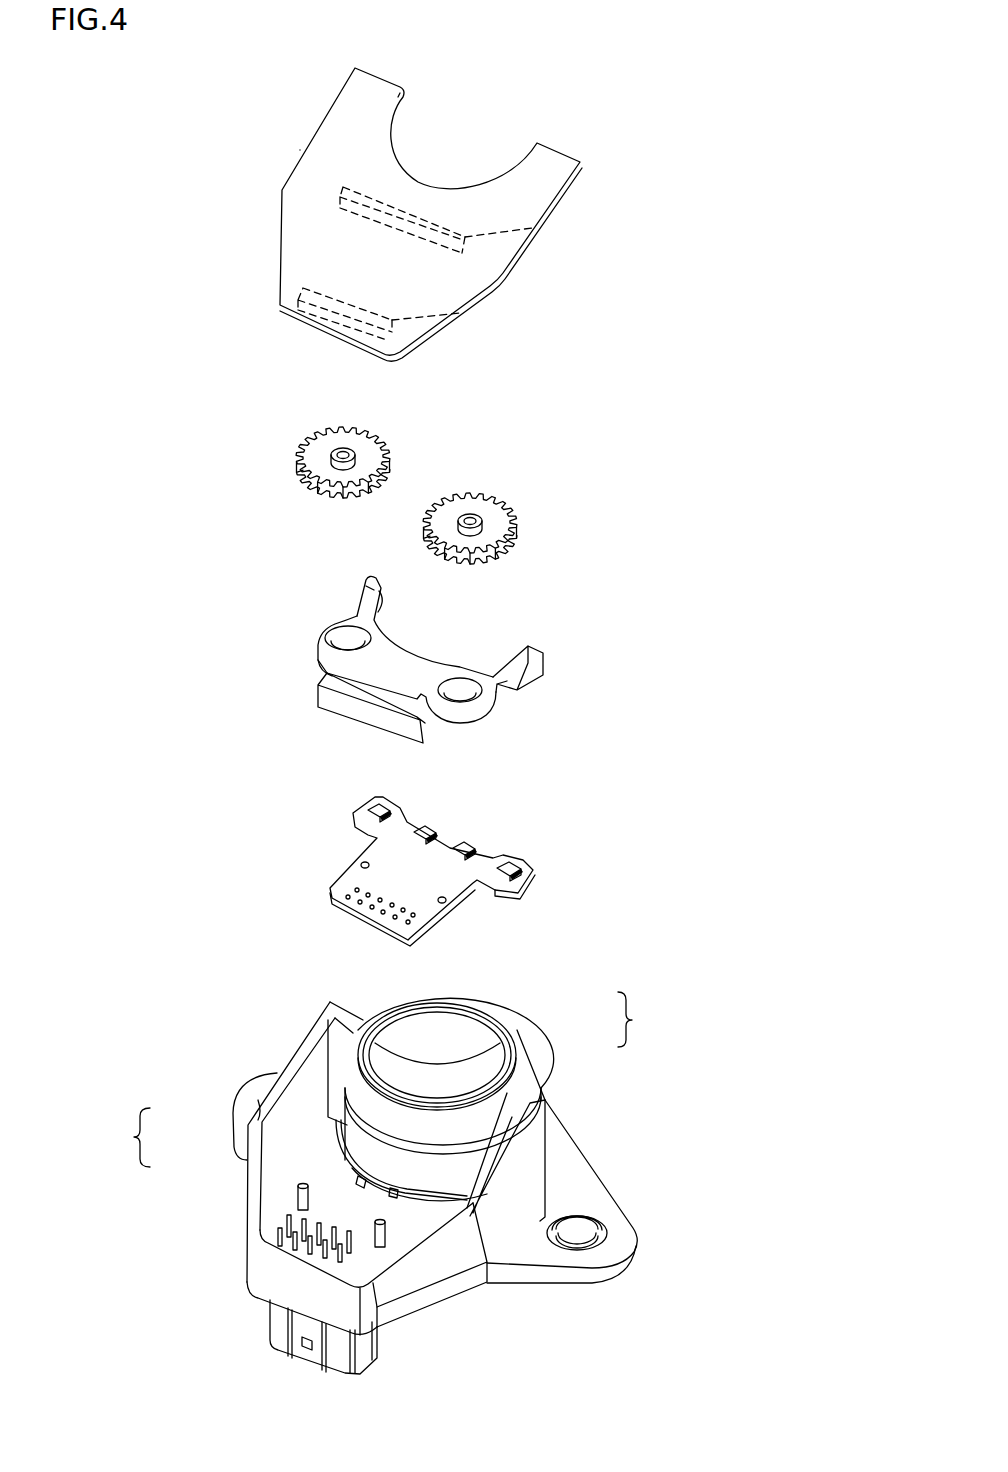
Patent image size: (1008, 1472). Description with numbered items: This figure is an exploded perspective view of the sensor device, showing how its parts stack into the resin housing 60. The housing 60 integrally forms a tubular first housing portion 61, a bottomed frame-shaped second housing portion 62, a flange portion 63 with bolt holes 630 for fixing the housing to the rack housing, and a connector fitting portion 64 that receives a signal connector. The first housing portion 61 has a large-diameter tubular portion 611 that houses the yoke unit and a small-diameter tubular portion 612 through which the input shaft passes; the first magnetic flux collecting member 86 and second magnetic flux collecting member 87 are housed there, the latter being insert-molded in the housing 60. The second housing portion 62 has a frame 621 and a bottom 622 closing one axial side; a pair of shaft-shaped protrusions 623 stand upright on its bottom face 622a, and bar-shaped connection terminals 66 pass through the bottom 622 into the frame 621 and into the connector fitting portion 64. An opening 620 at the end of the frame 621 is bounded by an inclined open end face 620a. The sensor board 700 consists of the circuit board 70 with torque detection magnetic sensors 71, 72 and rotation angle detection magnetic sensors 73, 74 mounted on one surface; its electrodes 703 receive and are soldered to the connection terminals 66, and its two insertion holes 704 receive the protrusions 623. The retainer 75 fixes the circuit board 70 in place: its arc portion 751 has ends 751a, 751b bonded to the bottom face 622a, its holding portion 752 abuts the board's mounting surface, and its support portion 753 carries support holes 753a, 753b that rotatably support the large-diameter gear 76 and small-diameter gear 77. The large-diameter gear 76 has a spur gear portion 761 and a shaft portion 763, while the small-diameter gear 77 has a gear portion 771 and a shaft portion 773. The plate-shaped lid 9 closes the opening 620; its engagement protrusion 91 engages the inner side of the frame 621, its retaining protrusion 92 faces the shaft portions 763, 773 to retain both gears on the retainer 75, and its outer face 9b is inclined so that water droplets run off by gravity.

The lid 9 is at (337, 100).
The outer face 9b is at (322, 260).
The engagement protrusion 91 is at (460, 313).
The retaining protrusion 92 is at (532, 228).
The small-diameter gear 77 is at (360, 444).
The gear portion 771 is at (322, 437).
The shaft portion 773 is at (357, 460).
The large-diameter gear 76 is at (504, 511).
The gear portion 761 is at (495, 500).
The shaft portion 763 is at (483, 527).
The retainer 75 is at (436, 648).
The arc portion 751 is at (393, 643).
The end of arc portion 751a is at (547, 663).
The end of arc portion 751b is at (363, 588).
The holding portion 752 is at (340, 710).
The support portion 753 is at (415, 673).
The support hole 753a is at (477, 703).
The support hole 753b is at (323, 628).
The first magnetic flux collecting member 86 is at (378, 602).
The sensor board 700 is at (418, 860).
The circuit board 70 is at (433, 930).
The torque detection magnetic sensor 71 is at (465, 845).
The torque detection magnetic sensor 72 is at (427, 827).
The rotation angle detection magnetic sensor 73 is at (513, 865).
The rotation angle detection magnetic sensor 74 is at (388, 805).
The electrodes 703 is at (355, 889).
The insertion holes 704 is at (361, 863).
The housing 60 is at (389, 1165).
The first housing portion 61 is at (503, 1096).
The large-diameter tubular portion 611 is at (533, 1050).
The small-diameter tubular portion 612 is at (507, 1022).
The second housing portion 62 is at (326, 1171).
The opening 620 is at (321, 1052).
The open end face 620a is at (397, 1254).
The frame 621 is at (245, 1178).
The bottom 622 is at (312, 1160).
The bottom face 622a is at (418, 1222).
The shaft-shaped protrusions 623 is at (375, 1232).
The flange portion 63 is at (577, 1163).
The bolt holes 630 is at (600, 1217).
The connector fitting portion 64 is at (268, 1320).
The connection terminals 66 is at (295, 1247).
The second magnetic flux collecting member 87 is at (328, 1117).